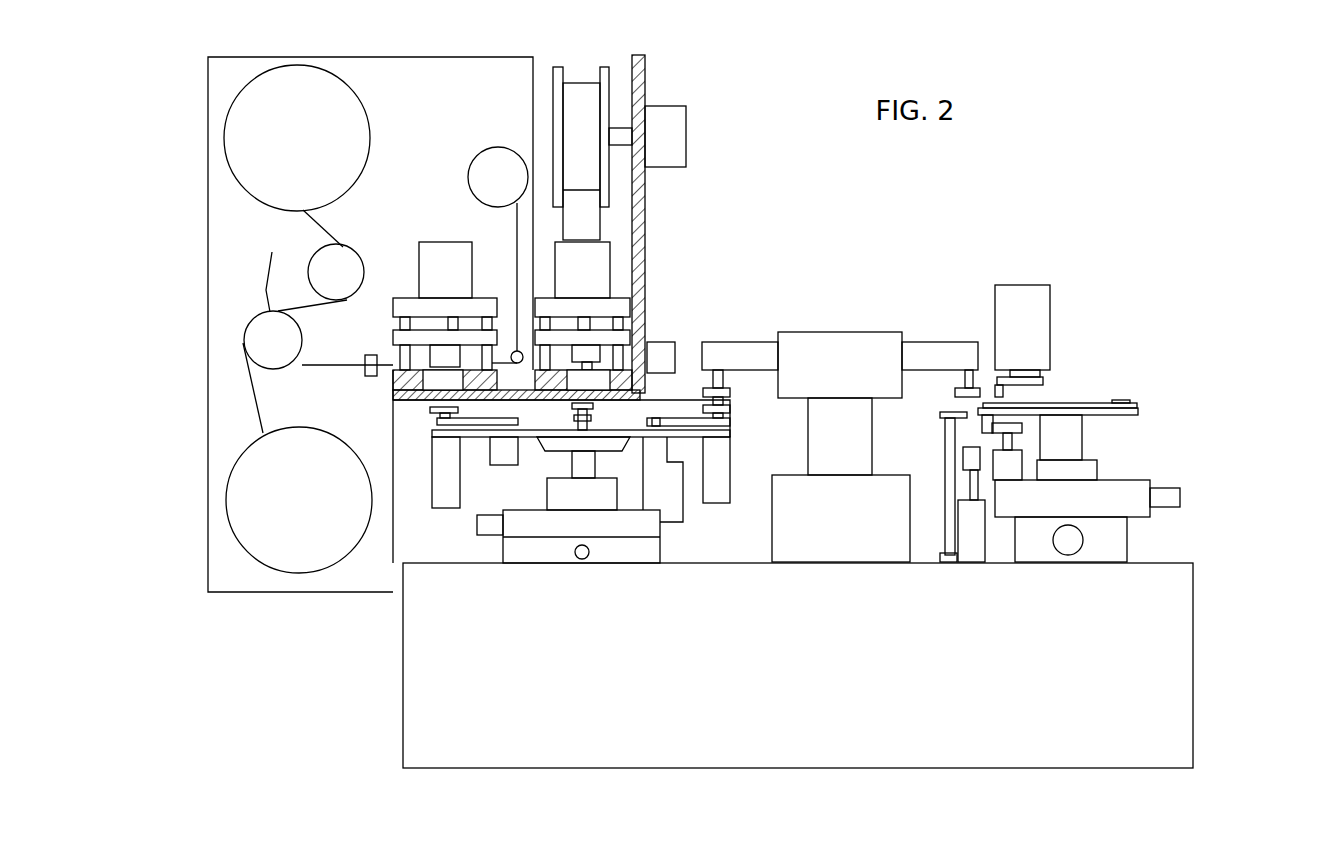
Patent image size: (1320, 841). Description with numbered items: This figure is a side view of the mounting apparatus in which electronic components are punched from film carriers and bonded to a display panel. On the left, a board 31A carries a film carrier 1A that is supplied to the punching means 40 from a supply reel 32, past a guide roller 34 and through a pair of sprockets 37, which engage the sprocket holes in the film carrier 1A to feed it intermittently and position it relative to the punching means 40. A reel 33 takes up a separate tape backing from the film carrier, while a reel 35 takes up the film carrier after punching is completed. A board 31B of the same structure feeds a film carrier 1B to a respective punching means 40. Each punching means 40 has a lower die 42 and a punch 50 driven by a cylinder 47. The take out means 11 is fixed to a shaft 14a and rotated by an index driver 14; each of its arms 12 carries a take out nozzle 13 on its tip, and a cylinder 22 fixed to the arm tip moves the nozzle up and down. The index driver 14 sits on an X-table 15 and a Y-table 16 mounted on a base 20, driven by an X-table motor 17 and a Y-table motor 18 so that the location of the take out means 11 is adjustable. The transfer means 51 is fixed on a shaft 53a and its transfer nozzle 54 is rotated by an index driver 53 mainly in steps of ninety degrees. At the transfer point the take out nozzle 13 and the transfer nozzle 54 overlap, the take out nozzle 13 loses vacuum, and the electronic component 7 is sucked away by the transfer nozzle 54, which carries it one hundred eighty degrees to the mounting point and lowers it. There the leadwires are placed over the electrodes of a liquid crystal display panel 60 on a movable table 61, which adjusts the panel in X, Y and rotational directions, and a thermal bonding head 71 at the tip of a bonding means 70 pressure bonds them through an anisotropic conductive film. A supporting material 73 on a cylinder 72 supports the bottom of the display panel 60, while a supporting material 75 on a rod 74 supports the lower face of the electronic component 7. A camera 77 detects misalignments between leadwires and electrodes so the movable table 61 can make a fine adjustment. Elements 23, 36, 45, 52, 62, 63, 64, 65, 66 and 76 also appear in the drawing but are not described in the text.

The film carrier 1A is at (317, 367).
The film carrier 1B is at (585, 77).
The electronic component 7 is at (727, 403).
The take out means 11 is at (620, 450).
The arm 12 is at (688, 437).
The take out nozzle 13 is at (432, 410).
The index driver 14 is at (607, 505).
The shaft 14a is at (570, 473).
The X-table 15 is at (543, 558).
The Y-table 16 is at (658, 525).
The X-table motor 17 is at (587, 557).
The Y-table motor 18 is at (483, 530).
The base 20 is at (1193, 648).
The cylinder 22 is at (447, 508).
The guide block 23 is at (504, 460).
The board 31A is at (393, 57).
The board 31B is at (645, 200).
The supply reel 32 is at (350, 105).
The reel 33 is at (312, 560).
The guide roller 34 is at (313, 272).
The reel 35 is at (492, 160).
The housing 36 is at (258, 403).
The sprockets 37 is at (365, 353).
The punching means 40 is at (405, 255).
The lower die 42 is at (392, 387).
The arm 45 is at (490, 300).
The cylinder 47 is at (450, 252).
The punch 50 is at (440, 355).
The transfer means 51 is at (855, 345).
The arm 52 is at (765, 350).
The index driver 53 is at (820, 550).
The shaft 53a is at (817, 428).
The transfer nozzle 54 is at (718, 385).
The liquid crystal display panel 60 is at (1135, 410).
The movable table 61 is at (1185, 445).
The base block 62 is at (1115, 545).
The slide 63 is at (1115, 490).
The support 64 is at (1068, 445).
The roller 65 is at (1072, 545).
The stopper 66 is at (1175, 500).
The bonding means 70 is at (1040, 320).
The thermal bonding head 71 is at (1040, 392).
The cylinder 72 is at (1005, 475).
The supporting material 73 is at (980, 427).
The rod 74 is at (945, 560).
The supporting material 75 is at (947, 427).
The cylinder 76 is at (968, 555).
The camera 77 is at (978, 435).